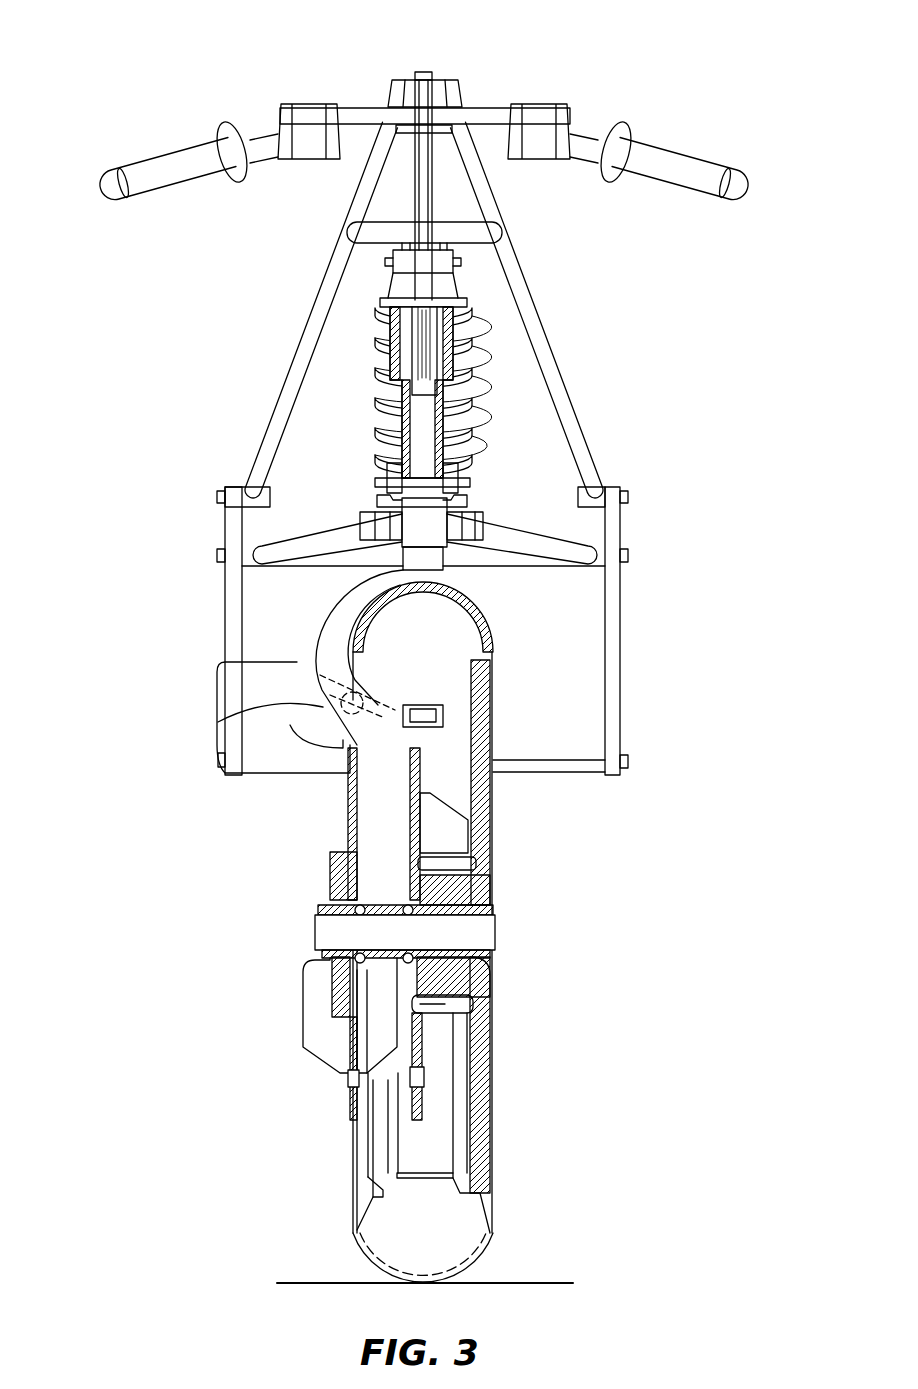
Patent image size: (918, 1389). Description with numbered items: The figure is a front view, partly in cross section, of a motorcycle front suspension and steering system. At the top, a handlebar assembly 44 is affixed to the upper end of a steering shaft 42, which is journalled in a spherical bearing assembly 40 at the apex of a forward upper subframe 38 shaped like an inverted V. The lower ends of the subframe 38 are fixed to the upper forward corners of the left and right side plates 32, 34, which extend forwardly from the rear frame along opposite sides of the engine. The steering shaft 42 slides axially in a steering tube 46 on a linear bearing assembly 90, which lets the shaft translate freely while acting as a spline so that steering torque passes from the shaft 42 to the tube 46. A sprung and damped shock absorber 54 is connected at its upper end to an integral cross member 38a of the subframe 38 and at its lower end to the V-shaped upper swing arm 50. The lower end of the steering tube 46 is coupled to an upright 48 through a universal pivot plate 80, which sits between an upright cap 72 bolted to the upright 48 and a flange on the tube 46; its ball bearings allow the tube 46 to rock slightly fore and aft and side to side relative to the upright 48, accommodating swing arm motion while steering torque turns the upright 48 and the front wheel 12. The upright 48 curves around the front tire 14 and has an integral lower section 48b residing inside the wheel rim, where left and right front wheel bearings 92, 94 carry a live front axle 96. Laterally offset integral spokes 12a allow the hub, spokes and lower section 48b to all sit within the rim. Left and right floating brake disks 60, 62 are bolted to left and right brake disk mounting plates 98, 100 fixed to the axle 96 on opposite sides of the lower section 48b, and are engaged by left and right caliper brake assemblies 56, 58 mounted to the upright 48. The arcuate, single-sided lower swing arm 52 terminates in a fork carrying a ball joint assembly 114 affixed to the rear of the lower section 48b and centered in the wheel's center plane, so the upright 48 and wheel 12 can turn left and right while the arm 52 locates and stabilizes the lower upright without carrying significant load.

The front wheel 12 is at (370, 1167).
The laterally offset integral spokes 12a is at (473, 1132).
The front tire 14 is at (490, 1240).
The left side plate 32 is at (613, 647).
The right side plate 34 is at (233, 573).
The forward upper subframe 38 is at (323, 283).
The integral cross member 38a is at (375, 238).
The spherical bearing assembly 40 is at (457, 78).
The steering shaft 42 is at (423, 167).
The handlebar assembly 44 is at (497, 112).
The steering tube 46 is at (393, 440).
The upright 48 is at (323, 580).
The lower section of the upright 48b is at (373, 803).
The upper swing arm 50 is at (563, 543).
The lower swing arm 52 is at (217, 698).
The shock absorber 54 is at (478, 410).
The left caliper brake assembly 56 is at (455, 822).
The right caliper brake assembly 58 is at (325, 1018).
The left floating brake disk 60 is at (422, 1093).
The right floating brake disk 62 is at (347, 1103).
The upright cap 72 is at (462, 520).
The universal pivot plate 80 is at (467, 483).
The linear bearing assembly 90 is at (440, 340).
The left front wheel bearing 92 is at (468, 900).
The right front wheel bearing 94 is at (348, 893).
The live front axle 96 is at (323, 932).
The left brake disk mounting plate 98 is at (487, 995).
The right brake disk mounting plate 100 is at (343, 985).
The ball joint assembly 114 is at (440, 708).